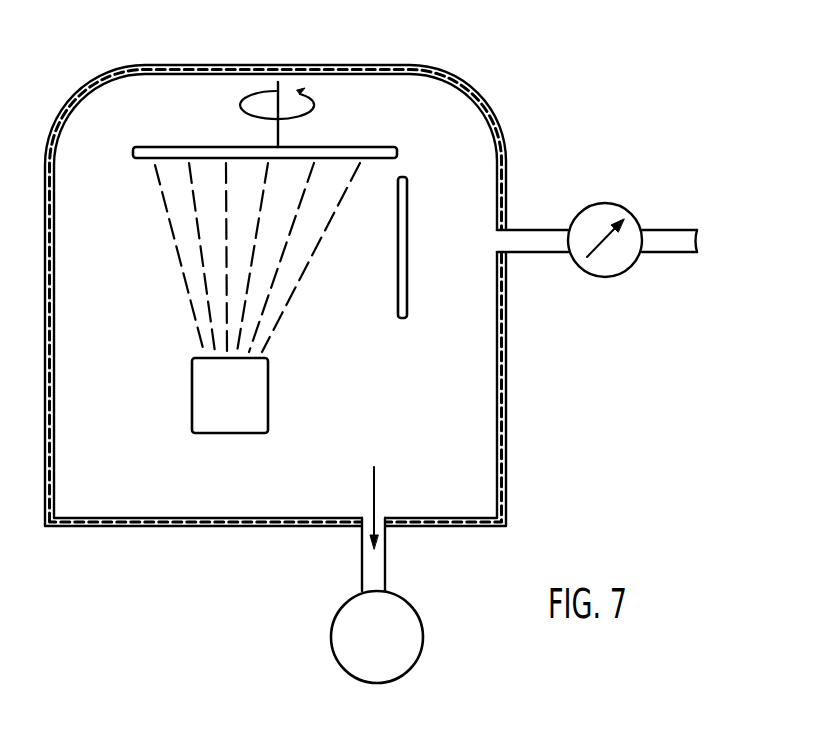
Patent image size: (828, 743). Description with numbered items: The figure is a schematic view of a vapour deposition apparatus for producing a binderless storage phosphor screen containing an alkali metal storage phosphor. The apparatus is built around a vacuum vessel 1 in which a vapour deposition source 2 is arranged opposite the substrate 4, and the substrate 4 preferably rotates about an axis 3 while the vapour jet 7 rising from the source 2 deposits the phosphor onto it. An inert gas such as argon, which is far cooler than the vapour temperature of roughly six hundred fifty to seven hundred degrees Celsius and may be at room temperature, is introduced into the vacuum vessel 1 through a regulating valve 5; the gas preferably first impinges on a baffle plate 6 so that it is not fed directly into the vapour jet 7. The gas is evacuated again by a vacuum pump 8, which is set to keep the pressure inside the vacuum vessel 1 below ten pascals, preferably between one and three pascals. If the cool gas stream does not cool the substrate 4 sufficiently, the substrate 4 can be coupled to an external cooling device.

The vacuum vessel 1 is at (507, 437).
The vapour deposition source 2 is at (196, 411).
The axis 3 is at (279, 83).
The substrate 4 is at (368, 147).
The regulating valve 5 is at (620, 212).
The baffle plate 6 is at (407, 305).
The vapour jet 7 is at (190, 273).
The vacuum pump 8 is at (411, 643).